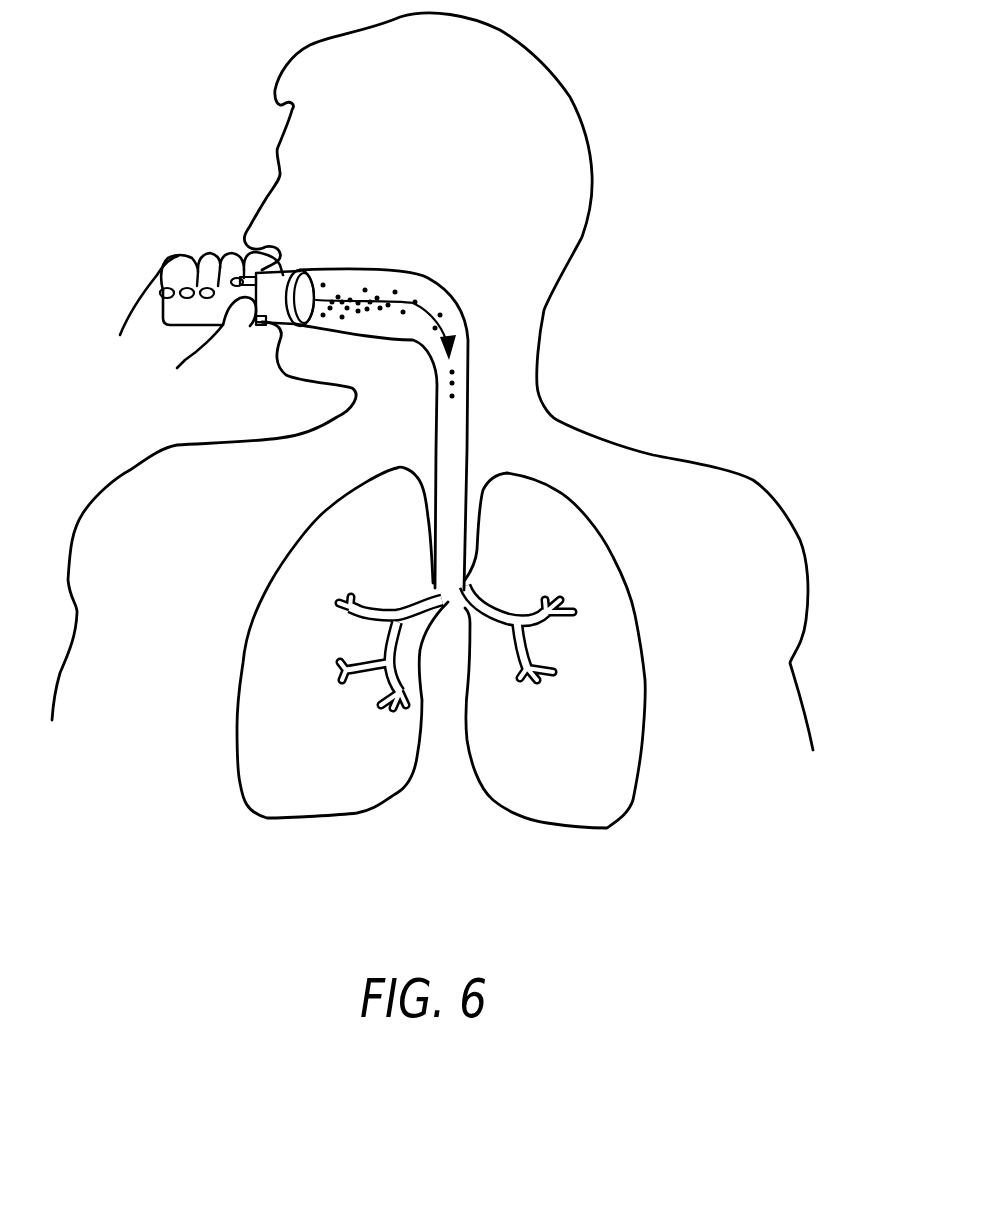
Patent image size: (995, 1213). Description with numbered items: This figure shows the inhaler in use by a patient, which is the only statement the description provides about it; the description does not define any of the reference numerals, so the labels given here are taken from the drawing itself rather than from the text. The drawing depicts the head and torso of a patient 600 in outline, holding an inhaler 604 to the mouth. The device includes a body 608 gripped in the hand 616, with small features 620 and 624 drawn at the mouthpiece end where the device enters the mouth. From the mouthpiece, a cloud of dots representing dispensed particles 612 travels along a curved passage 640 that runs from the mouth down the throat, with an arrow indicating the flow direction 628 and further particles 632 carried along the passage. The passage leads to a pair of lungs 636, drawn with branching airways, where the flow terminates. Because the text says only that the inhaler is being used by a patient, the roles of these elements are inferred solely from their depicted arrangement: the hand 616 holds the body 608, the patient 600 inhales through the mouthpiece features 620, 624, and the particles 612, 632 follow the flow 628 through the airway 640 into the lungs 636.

The user 600 is at (575, 78).
The inhaler device 604 is at (298, 270).
The canister 608 is at (178, 320).
The aerosolized particles 612 is at (368, 290).
The hand 616 is at (240, 257).
The upper actuator tab 620 is at (253, 278).
The lower actuator tab 624 is at (267, 327).
The airflow direction 628 is at (427, 313).
The particles in airway 632 is at (395, 292).
The lungs 636 is at (543, 800).
The airway 640 is at (458, 308).